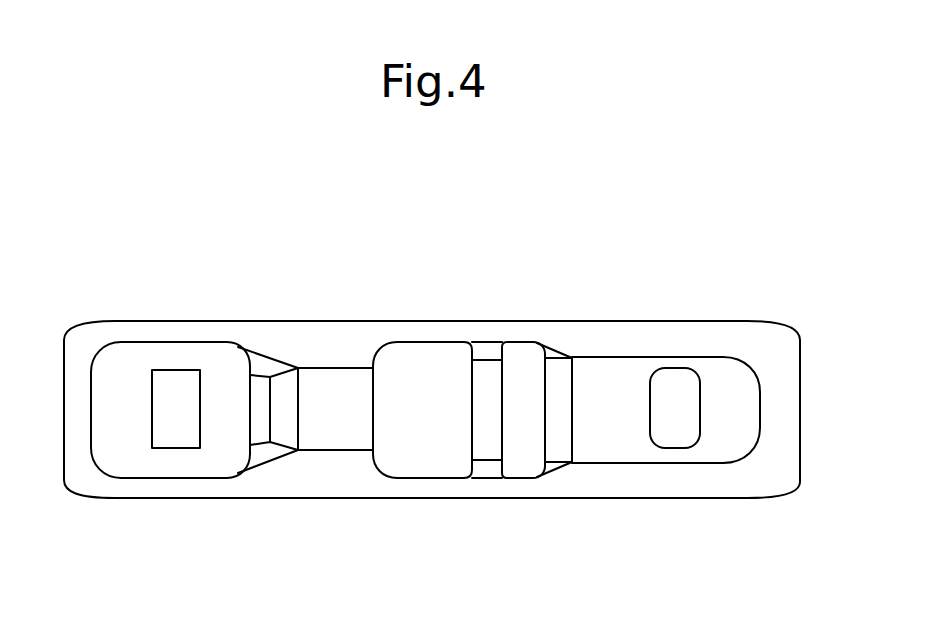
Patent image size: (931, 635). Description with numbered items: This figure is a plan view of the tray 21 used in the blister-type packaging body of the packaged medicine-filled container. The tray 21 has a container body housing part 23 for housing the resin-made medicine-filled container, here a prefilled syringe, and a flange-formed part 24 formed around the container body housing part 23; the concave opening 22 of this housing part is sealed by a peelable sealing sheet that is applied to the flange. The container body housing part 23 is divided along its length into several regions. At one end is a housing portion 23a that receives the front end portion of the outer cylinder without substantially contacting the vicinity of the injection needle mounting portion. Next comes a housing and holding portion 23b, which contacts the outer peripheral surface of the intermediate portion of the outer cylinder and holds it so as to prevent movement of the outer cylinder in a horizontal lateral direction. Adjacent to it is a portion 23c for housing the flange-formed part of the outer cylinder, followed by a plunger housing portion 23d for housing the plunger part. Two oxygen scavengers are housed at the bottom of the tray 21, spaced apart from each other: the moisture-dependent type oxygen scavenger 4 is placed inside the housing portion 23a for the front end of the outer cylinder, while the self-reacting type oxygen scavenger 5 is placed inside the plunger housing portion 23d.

The tray 21 is at (495, 320).
The container body housing part 23 is at (198, 362).
The housing portion 23a is at (133, 450).
The housing and holding portion 23b is at (417, 357).
The portion for housing flange-formed part of outer cylinder 23c is at (522, 427).
The plunger housing portion 23d is at (732, 427).
The concave opening 22 is at (392, 477).
The flange-formed part 24 is at (477, 485).
The moisture-dependent type oxygen scavenger 4 is at (183, 427).
The self-reacting type oxygen scavenger 5 is at (676, 387).